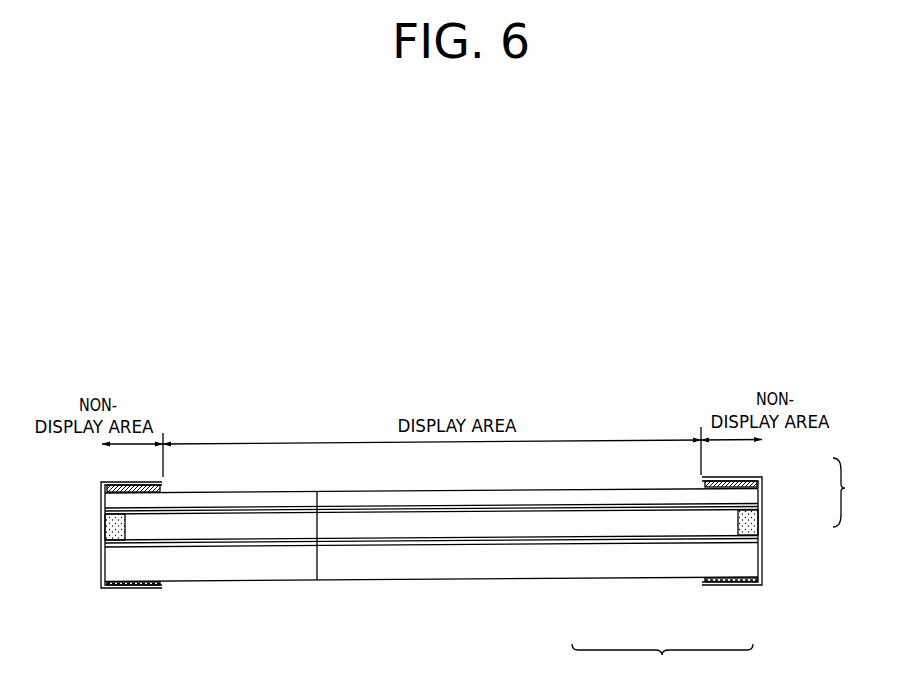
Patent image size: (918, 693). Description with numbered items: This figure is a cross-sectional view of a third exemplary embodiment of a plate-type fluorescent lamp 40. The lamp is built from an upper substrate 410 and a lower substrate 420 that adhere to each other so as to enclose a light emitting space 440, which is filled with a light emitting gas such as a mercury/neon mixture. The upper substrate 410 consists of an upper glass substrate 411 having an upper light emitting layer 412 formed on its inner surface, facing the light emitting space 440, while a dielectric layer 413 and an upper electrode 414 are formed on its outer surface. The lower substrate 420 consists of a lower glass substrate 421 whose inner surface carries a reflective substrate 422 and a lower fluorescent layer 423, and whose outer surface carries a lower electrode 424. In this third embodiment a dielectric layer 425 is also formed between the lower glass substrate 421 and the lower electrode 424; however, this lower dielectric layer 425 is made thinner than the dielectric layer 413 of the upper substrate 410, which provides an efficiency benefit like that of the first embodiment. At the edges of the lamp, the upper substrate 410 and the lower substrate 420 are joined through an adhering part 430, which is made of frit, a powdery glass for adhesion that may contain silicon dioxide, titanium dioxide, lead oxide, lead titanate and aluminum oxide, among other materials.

The plate-type fluorescent lamp 40 is at (286, 404).
The upper substrate 410 is at (850, 520).
The upper glass substrate 411 is at (758, 499).
The upper light emitting layer 412 is at (758, 508).
The dielectric layer 413 is at (757, 484).
The upper electrode 414 is at (747, 476).
The lower substrate 420 is at (647, 678).
The lower glass substrate 421 is at (658, 569).
The reflective substrate 422 is at (616, 543).
The lower fluorescent layer 423 is at (574, 545).
The lower electrode 424 is at (722, 587).
The dielectric layer 425 is at (752, 587).
The adhering part 430 is at (120, 538).
The light emitting space 440 is at (410, 527).